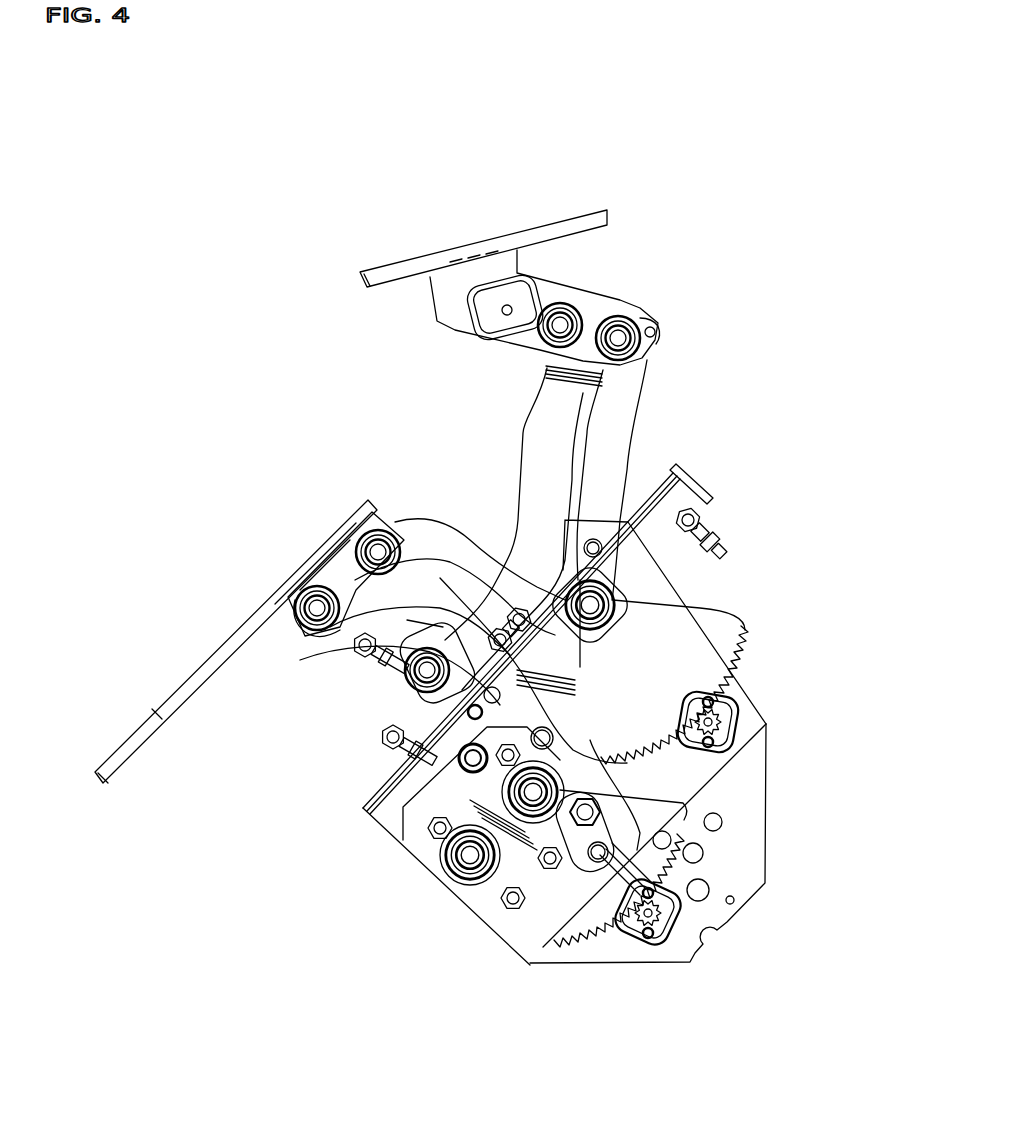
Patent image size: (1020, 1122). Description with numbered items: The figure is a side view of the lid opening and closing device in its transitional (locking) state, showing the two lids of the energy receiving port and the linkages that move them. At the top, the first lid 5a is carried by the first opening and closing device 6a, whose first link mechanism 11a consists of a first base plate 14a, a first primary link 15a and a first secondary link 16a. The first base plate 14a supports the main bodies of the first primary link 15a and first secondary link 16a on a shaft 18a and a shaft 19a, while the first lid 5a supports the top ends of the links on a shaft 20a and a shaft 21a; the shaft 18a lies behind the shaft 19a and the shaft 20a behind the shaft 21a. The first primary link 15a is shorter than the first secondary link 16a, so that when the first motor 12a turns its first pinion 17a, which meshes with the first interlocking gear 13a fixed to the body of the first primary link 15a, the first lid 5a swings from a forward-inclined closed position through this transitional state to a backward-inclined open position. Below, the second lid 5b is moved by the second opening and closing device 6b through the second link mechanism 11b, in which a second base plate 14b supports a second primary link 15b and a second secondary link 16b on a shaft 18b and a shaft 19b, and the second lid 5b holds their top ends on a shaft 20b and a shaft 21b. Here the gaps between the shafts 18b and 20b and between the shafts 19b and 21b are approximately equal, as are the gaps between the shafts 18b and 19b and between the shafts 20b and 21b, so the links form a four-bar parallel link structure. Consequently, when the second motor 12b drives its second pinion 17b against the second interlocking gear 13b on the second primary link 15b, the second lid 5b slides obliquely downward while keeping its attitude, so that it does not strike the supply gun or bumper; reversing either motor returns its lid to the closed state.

The first lid 5a is at (487, 235).
The second lid 5b is at (165, 698).
The first opening and closing device 6a is at (677, 393).
The second opening and closing device 6b is at (392, 498).
The first link mechanism 11a is at (538, 388).
The second link mechanism 11b is at (420, 520).
The first motor 12a is at (740, 715).
The second motor 12b is at (673, 930).
The first interlocking gear 13a is at (683, 667).
The second interlocking gear 13b is at (575, 932).
The first base plate 14a is at (757, 858).
The second base plate 14b is at (458, 888).
The first primary link 15a is at (633, 448).
The second primary link 15b is at (463, 535).
The first secondary link 16a is at (528, 433).
The second secondary link 16b is at (367, 613).
The first pinion 17a is at (720, 727).
The second pinion 17b is at (653, 940).
The shaft 18a is at (593, 603).
The shaft 18b is at (533, 792).
The shaft 19a is at (423, 670).
The shaft 19b is at (457, 855).
The shaft 20a is at (648, 322).
The shaft 20b is at (368, 538).
The shaft 21a is at (588, 330).
The shaft 21b is at (290, 605).